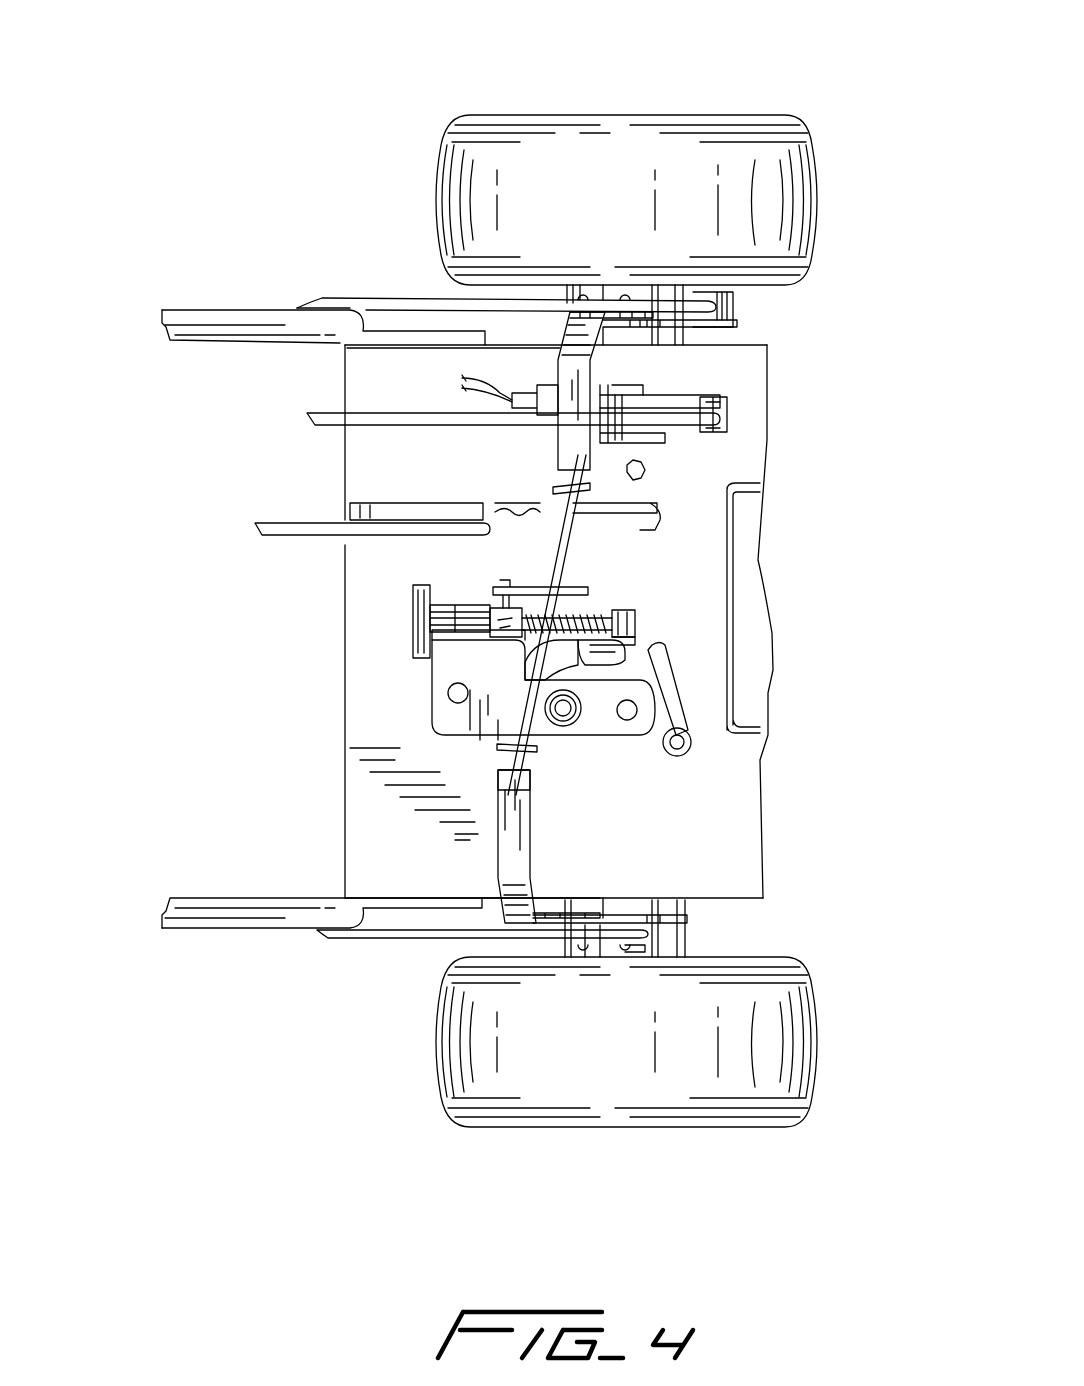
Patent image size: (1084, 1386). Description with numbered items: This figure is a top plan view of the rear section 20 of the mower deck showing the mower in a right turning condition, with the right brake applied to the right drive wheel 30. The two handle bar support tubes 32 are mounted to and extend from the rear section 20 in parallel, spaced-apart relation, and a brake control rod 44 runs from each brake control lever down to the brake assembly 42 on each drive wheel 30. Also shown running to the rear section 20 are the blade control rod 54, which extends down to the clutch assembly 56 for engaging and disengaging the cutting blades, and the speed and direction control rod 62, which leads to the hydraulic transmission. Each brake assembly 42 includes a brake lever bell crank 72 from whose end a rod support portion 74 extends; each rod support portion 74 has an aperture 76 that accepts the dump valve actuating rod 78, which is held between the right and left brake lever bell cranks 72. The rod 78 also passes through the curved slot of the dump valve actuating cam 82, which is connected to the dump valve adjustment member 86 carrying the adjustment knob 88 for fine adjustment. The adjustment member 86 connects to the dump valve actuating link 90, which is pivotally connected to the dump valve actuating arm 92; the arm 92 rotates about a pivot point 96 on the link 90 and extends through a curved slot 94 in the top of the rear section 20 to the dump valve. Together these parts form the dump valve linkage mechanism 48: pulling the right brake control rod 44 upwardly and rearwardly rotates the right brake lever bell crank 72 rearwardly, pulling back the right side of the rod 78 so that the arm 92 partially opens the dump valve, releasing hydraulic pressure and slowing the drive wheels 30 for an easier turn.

The rear section 20 is at (740, 828).
The drive wheel 30 is at (614, 140).
The handle bar support tube 32 is at (228, 320).
The brake assembly 42 is at (740, 316).
The brake control rod 44 is at (405, 303).
The dump valve linkage mechanism 48 is at (645, 617).
The blade control rod 54 is at (325, 415).
The clutch assembly 56 is at (722, 405).
The speed and direction control rod 62 is at (283, 533).
The brake lever bell crank 72 is at (580, 370).
The rod support portion 74 is at (645, 470).
The aperture 76 is at (560, 458).
The dump valve actuating rod 78 is at (573, 545).
The dump valve actuating cam 82 is at (548, 590).
The dump valve adjustment member 86 is at (660, 600).
The adjustment knob 88 is at (420, 618).
The dump valve actuating link 90 is at (480, 700).
The dump valve actuating arm 92 is at (618, 648).
The curved slot 94 is at (560, 648).
The pivot point 96 is at (563, 710).